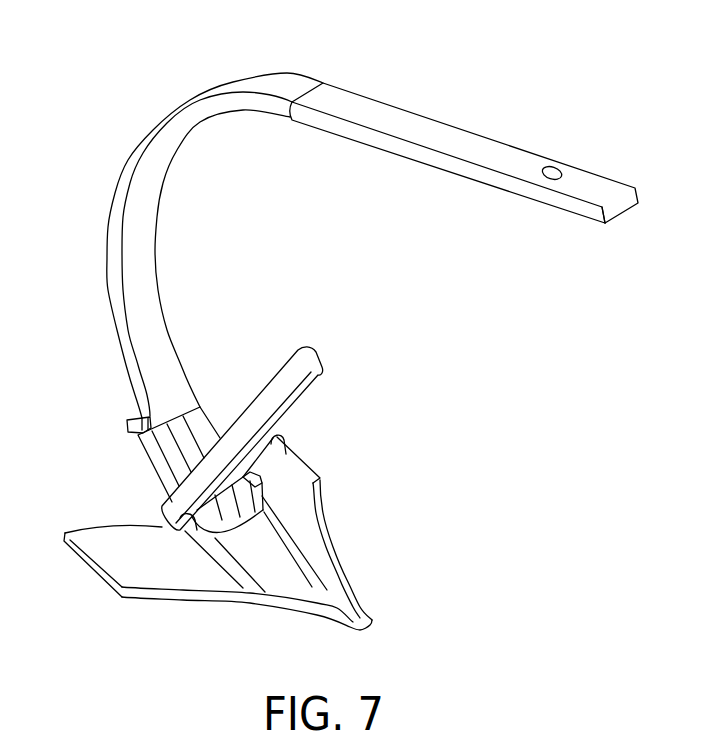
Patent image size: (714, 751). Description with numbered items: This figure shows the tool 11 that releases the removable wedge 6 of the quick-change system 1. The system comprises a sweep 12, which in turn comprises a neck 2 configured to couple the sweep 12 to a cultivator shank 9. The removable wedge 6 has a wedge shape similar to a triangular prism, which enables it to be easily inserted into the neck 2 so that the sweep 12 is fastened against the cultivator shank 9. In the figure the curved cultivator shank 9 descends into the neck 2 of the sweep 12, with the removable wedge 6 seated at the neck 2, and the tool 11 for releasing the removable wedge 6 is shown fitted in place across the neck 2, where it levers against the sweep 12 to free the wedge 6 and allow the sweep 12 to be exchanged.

The quick-change system 1 is at (128, 472).
The neck 2 is at (199, 436).
The removable wedge 6 is at (120, 412).
The cultivator shank 9 is at (153, 240).
The tool 11 is at (280, 388).
The sweep 12 is at (323, 563).